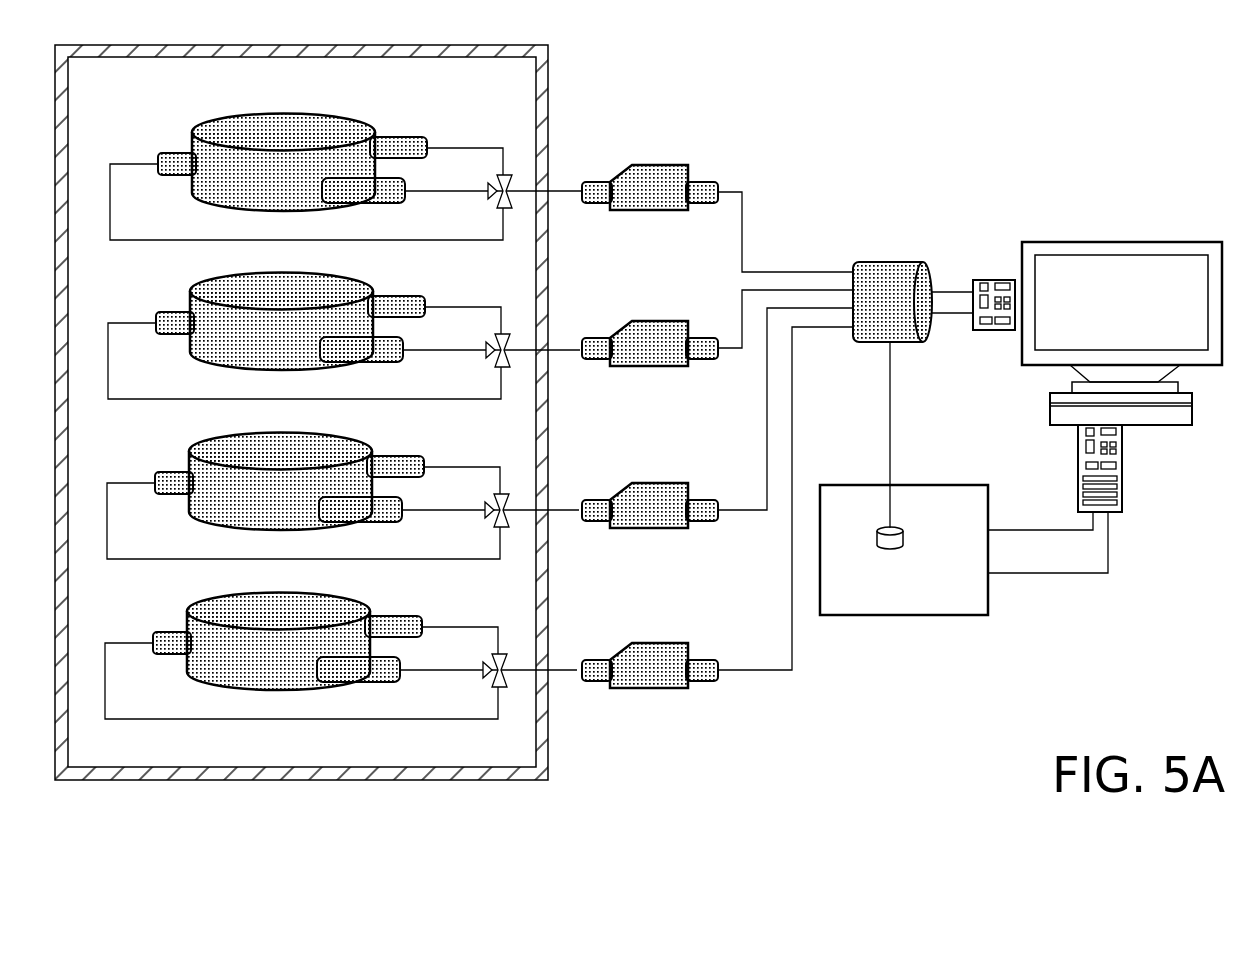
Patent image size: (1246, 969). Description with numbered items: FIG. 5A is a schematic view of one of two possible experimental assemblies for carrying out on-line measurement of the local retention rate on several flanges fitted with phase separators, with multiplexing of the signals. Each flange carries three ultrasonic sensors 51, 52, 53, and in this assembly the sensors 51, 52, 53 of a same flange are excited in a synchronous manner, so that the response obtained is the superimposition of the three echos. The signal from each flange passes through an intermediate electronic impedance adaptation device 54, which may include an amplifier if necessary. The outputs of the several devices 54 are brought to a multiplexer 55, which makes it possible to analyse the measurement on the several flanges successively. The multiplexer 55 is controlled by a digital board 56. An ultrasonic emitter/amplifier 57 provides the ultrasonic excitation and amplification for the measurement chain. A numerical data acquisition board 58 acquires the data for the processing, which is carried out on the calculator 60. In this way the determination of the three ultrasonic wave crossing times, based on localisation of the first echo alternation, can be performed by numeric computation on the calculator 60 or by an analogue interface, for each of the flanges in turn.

The ultrasonic sensor 51 is at (404, 137).
The ultrasonic sensor 52 is at (388, 200).
The ultrasonic sensor 53 is at (173, 153).
The intermediate electronic impedance adaptation device 54 is at (669, 170).
The multiplexer 55 is at (892, 270).
The digital board 56 is at (982, 280).
The ultrasonic emitter/amplifier 57 is at (903, 608).
The numerical data acquisition board 58 is at (1122, 470).
The calculator 60 is at (1158, 270).